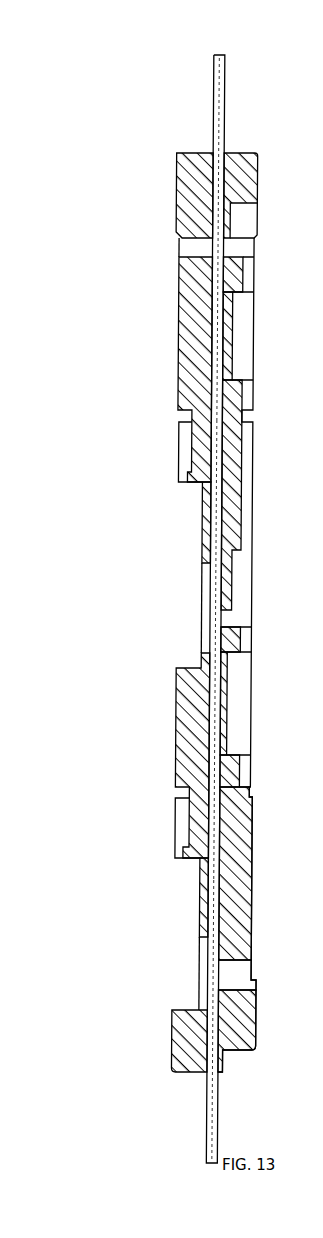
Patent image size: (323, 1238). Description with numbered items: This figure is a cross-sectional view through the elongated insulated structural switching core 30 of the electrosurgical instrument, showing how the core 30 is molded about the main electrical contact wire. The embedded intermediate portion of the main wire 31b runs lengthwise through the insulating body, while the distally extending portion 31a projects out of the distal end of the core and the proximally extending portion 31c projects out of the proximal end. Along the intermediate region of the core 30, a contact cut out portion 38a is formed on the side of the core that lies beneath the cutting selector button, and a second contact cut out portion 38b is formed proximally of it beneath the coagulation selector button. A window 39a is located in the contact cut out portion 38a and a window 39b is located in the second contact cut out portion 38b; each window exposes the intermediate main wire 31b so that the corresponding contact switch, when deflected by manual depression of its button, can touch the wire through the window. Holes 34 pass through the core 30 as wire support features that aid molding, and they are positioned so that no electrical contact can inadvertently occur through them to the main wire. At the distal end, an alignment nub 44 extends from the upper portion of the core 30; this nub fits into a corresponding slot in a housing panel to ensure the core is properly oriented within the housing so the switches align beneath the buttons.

The insulated structural switching core 30 is at (130, 727).
The distally extending portion of the main wire 31a is at (212, 1122).
The intermediate portion of the main wire 31b is at (214, 700).
The proximally extending portion of the main wire 31c is at (218, 115).
The holes 34 is at (238, 973).
The contact cut out portion 38a is at (183, 867).
The second contact cut out portion 38b is at (196, 521).
The window 39a is at (205, 980).
The window 39b is at (204, 602).
The alignment nub 44 is at (192, 1073).